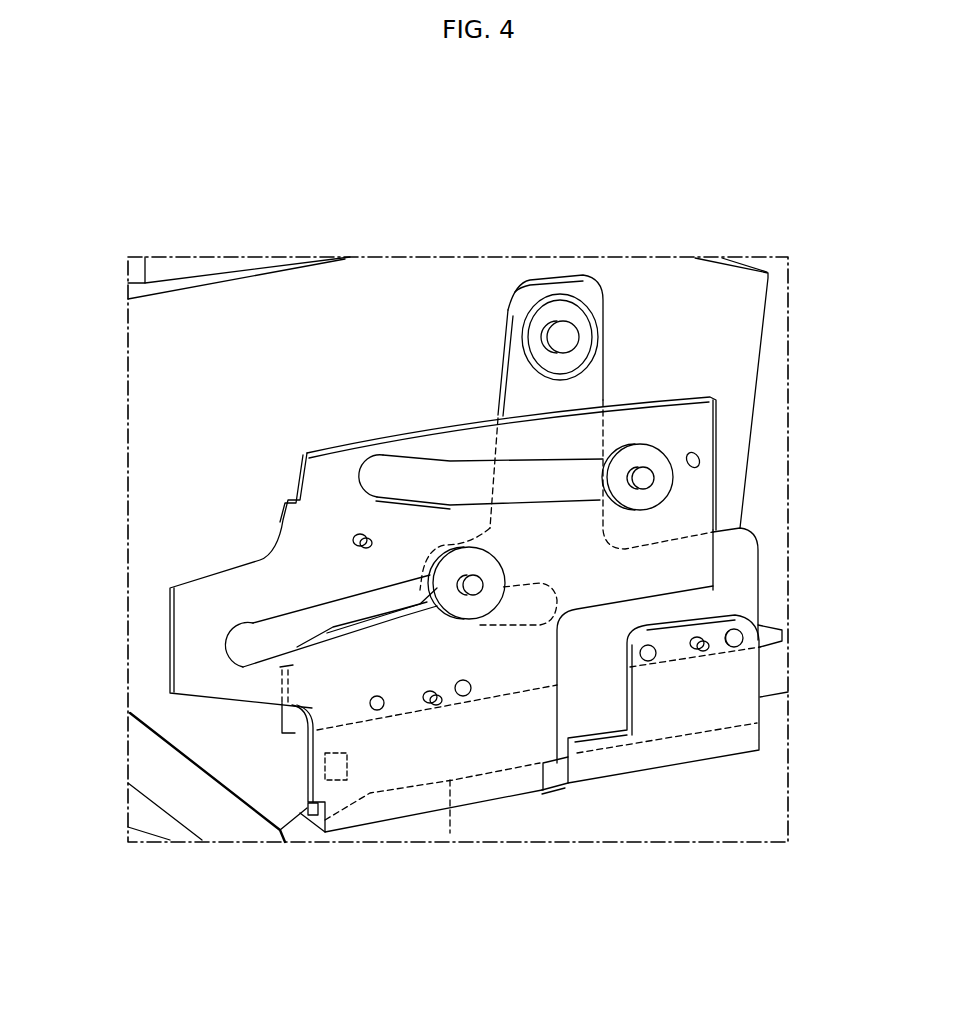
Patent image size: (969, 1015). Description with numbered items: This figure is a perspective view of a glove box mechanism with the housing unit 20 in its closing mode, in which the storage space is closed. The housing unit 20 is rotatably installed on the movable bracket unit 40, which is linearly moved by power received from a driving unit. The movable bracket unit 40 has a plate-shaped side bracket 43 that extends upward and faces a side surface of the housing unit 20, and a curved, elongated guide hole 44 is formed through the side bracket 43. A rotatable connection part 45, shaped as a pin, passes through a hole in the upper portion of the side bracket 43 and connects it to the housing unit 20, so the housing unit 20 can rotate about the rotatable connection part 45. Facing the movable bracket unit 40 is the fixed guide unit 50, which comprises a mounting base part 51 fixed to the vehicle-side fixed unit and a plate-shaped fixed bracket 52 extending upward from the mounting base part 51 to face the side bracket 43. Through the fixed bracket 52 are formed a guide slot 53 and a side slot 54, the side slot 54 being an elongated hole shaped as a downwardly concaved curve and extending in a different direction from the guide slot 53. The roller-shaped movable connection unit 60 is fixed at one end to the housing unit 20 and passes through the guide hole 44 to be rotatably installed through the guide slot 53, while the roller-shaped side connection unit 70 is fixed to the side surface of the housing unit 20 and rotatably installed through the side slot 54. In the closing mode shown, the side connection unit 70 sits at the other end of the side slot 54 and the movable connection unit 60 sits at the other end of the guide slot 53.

The housing unit 20 is at (284, 333).
The movable bracket unit 40 is at (680, 737).
The side bracket 43 is at (521, 285).
The guide hole 44 is at (513, 630).
The rotatable connection part 45 is at (573, 312).
The fixed guide unit 50 is at (508, 812).
The mounting base part 51 is at (536, 796).
The fixed bracket 52 is at (197, 602).
The guide slot 53 is at (283, 612).
The side slot 54 is at (440, 460).
The movable connection unit 60 is at (487, 570).
The side connection unit 70 is at (650, 457).